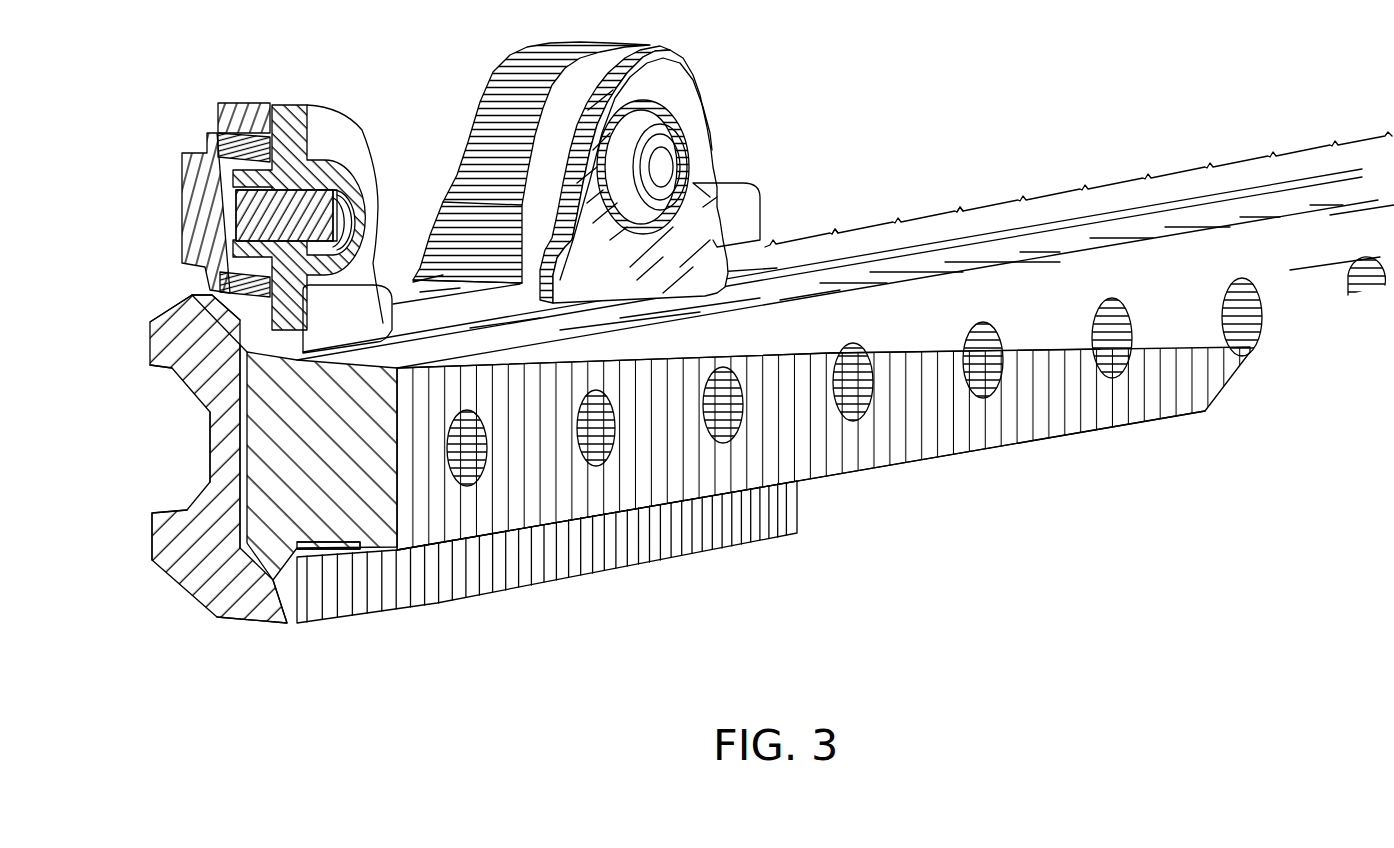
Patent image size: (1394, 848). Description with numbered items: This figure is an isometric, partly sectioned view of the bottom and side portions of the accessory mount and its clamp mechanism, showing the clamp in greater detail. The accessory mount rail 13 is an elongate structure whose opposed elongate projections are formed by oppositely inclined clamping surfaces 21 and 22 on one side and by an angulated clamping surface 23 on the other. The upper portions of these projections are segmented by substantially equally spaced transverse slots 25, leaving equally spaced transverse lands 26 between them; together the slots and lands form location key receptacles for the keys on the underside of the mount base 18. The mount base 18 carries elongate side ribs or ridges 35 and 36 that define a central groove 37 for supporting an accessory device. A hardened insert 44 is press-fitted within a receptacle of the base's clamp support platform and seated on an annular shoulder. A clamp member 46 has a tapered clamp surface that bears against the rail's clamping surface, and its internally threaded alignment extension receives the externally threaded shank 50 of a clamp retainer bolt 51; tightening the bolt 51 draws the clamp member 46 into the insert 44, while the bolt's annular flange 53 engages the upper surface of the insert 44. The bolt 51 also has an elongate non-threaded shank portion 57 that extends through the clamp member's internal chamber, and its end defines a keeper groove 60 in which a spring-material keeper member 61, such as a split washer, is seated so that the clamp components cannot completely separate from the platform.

The accessory mount rail 13 is at (327, 507).
The mount base 18 is at (158, 304).
The clamping surface 21 is at (280, 560).
The clamping surface 22 is at (297, 557).
The clamping surface 23 is at (250, 320).
The transverse slots 25 is at (1008, 203).
The transverse lands 26 is at (908, 220).
The side rib 35 is at (185, 545).
The side rib 36 is at (180, 338).
The central groove 37 is at (208, 432).
The hardened insert 44 is at (249, 103).
The clamp member 46 is at (318, 105).
The externally threaded shank 50 is at (300, 105).
The clamp retainer bolt 51 is at (205, 197).
The annular flange 53 is at (212, 140).
The non-threaded shank portion 57 is at (340, 218).
The keeper groove 60 is at (340, 228).
The keeper member 61 is at (345, 178).